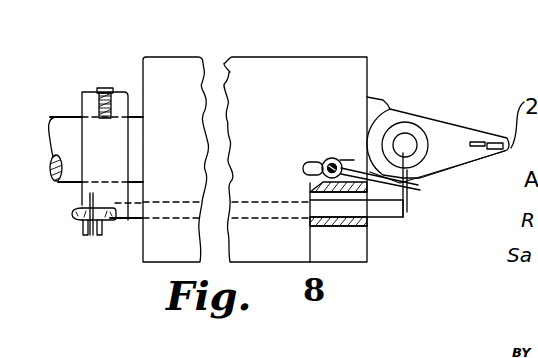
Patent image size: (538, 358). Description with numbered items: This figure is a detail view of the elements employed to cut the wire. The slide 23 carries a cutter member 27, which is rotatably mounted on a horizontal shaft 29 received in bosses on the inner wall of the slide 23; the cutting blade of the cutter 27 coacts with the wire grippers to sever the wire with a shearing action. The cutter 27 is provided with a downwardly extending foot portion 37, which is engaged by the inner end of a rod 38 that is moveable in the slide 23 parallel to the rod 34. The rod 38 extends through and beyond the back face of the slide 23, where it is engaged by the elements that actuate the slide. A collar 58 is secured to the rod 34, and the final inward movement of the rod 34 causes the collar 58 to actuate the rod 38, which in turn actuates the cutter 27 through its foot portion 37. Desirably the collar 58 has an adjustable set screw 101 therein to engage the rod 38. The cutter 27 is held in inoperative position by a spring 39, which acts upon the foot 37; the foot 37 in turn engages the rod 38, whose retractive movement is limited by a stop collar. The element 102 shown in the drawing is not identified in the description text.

The slide 23 is at (347, 67).
The cutter member 27 is at (460, 160).
The horizontal shaft 29 is at (408, 140).
The rod 34 is at (60, 130).
The foot portion 37 is at (407, 207).
The rod 38 is at (388, 212).
The spring 39 is at (368, 225).
The collar 58 is at (118, 100).
The adjustable set screw 101 is at (80, 204).
The bent lever 102 is at (414, 189).